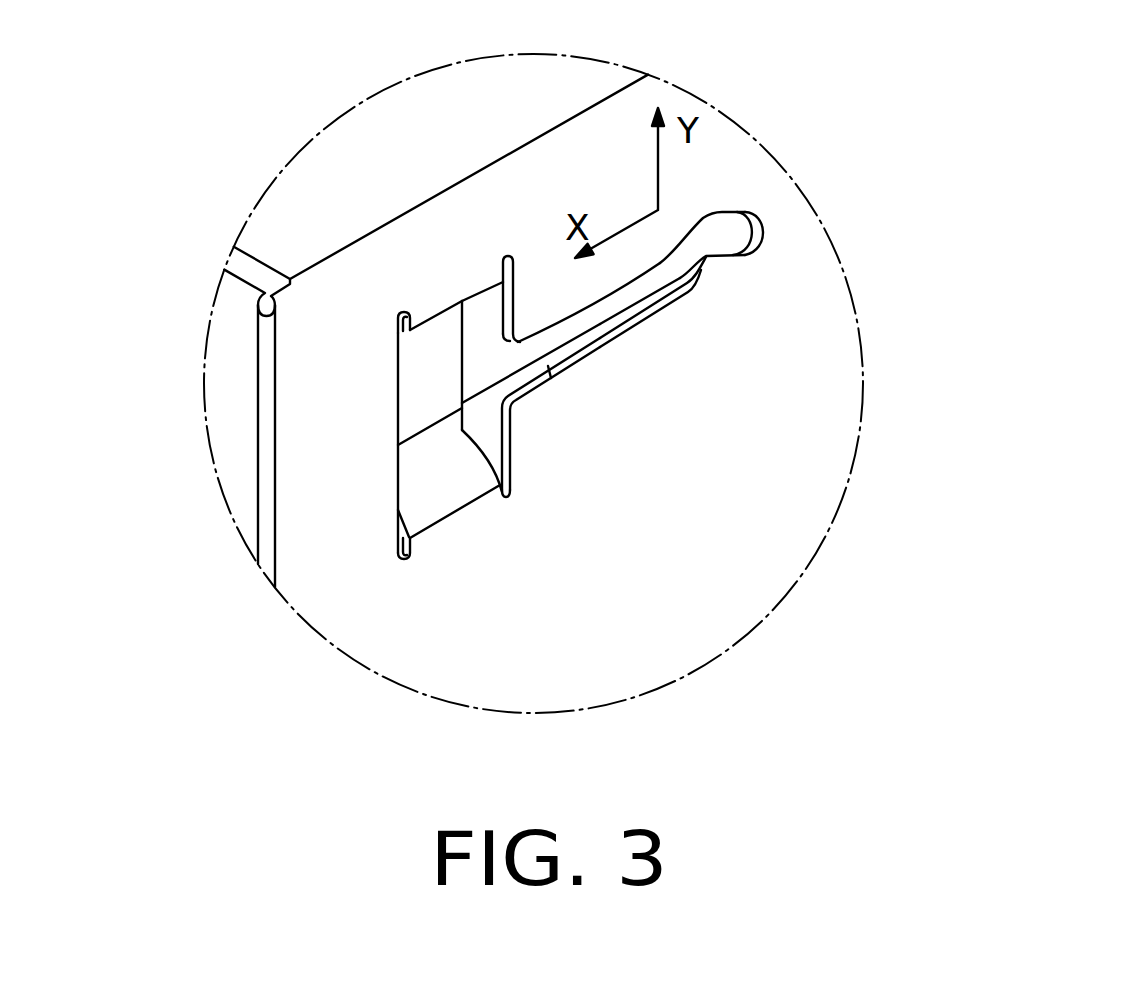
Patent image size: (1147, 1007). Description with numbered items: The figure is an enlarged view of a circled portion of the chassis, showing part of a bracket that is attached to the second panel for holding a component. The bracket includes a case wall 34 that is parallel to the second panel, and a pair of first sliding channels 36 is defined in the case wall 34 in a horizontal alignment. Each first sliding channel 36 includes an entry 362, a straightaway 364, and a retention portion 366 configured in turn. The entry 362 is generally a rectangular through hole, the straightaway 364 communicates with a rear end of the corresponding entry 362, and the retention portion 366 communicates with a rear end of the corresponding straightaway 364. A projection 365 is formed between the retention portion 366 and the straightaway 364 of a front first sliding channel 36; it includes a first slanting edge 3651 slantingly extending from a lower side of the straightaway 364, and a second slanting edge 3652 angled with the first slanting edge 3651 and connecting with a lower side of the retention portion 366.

The case wall 34 is at (397, 607).
The first sliding channel 36 is at (1020, 200).
The entry 362 is at (415, 397).
The straightaway 364 is at (602, 310).
The projection 365 is at (700, 263).
The first slanting edge 3651 is at (680, 285).
The second slanting edge 3652 is at (725, 257).
The retention portion 366 is at (735, 233).